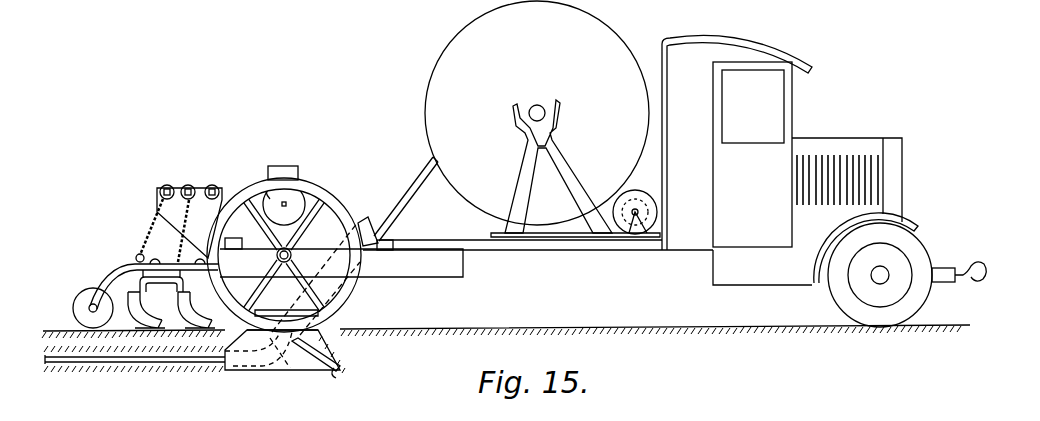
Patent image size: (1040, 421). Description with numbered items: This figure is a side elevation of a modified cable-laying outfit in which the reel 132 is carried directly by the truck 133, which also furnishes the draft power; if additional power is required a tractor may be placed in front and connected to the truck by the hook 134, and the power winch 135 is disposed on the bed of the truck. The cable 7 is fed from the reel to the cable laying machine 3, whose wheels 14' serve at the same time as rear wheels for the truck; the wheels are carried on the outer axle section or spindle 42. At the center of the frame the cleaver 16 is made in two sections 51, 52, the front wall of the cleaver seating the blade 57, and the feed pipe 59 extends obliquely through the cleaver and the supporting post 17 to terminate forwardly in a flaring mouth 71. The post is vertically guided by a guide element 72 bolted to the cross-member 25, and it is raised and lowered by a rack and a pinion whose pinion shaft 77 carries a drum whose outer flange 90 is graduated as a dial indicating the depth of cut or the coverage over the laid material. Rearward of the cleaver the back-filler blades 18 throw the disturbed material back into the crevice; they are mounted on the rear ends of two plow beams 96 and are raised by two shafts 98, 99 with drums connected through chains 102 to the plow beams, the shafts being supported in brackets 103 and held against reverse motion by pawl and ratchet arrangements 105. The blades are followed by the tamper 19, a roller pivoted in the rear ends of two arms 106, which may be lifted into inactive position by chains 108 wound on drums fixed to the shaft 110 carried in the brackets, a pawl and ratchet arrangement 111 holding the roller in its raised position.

The cable laying machine 3 is at (319, 179).
The cable 7 is at (422, 181).
The wheels of the laying device 14' is at (327, 253).
The cleaver 16 is at (343, 363).
The supporting post 17 is at (284, 167).
The back-filler blades 18 is at (136, 312).
The tamper 19 is at (84, 307).
The cross-member 25 is at (239, 239).
The outer axle section 42 is at (278, 258).
The cleaver section 51 is at (251, 370).
The cleaver section 52 is at (322, 330).
The blade 57 is at (337, 377).
The feed pipe 59 is at (282, 371).
The flaring mouth 71 is at (381, 242).
The guide element 72 is at (345, 237).
The pinion shaft 77 is at (284, 208).
The outer flange 90 is at (269, 197).
The plow beams 96 is at (177, 284).
The shaft 98 is at (180, 204).
The shaft 99 is at (204, 204).
The chains 102 is at (194, 243).
The brackets 103 is at (160, 209).
The pawl and ratchet arrangements 105 is at (212, 184).
The arms 106 is at (118, 274).
The chains 108 is at (162, 236).
The shaft 110 is at (159, 190).
The pawl and ratchet arrangement 111 is at (167, 184).
The reel 132 is at (601, 32).
The truck 133 is at (840, 134).
The hook 134 is at (970, 265).
The power winch 135 is at (653, 226).